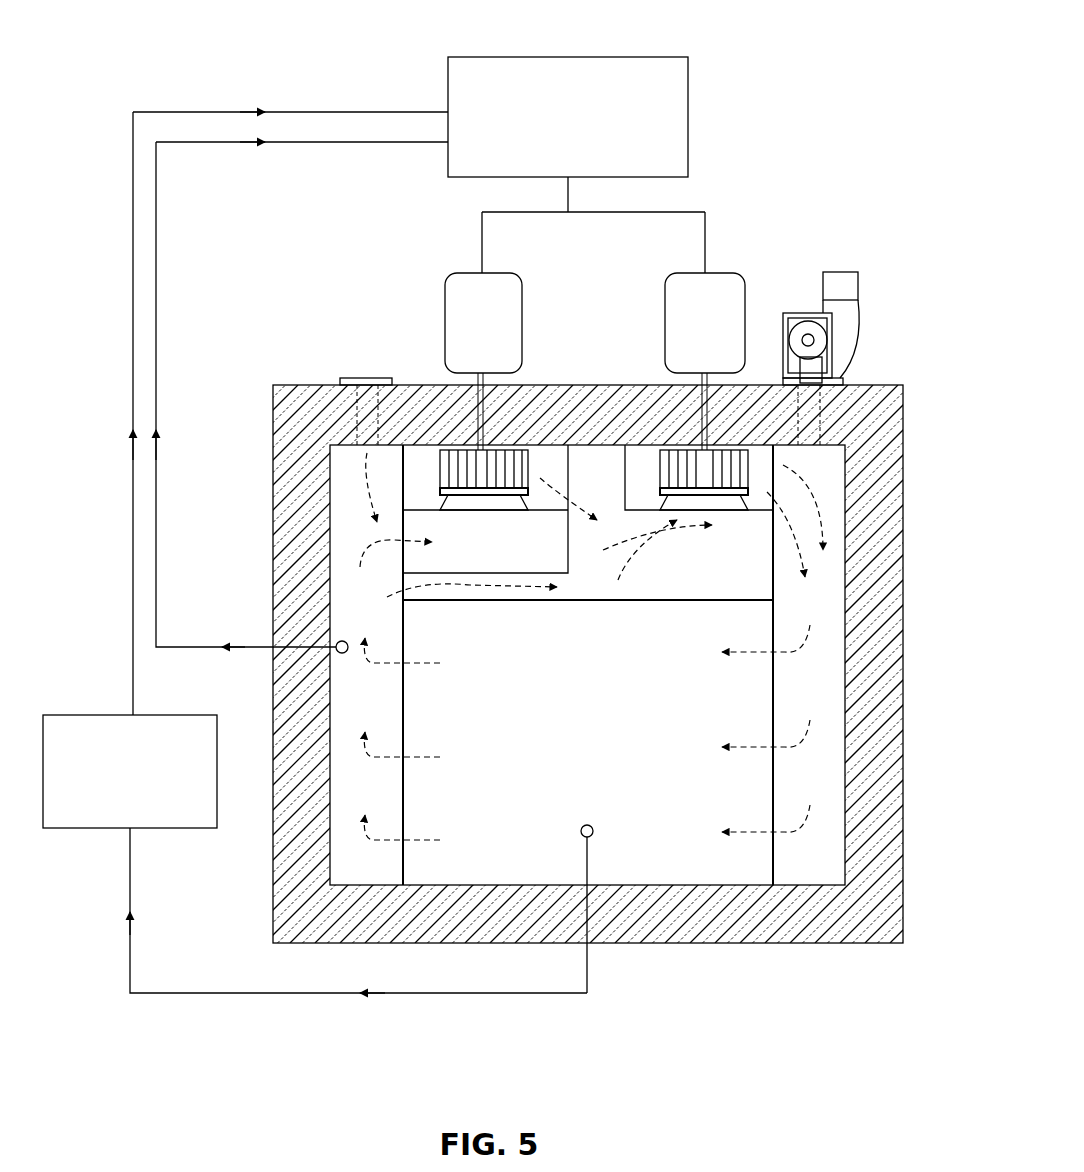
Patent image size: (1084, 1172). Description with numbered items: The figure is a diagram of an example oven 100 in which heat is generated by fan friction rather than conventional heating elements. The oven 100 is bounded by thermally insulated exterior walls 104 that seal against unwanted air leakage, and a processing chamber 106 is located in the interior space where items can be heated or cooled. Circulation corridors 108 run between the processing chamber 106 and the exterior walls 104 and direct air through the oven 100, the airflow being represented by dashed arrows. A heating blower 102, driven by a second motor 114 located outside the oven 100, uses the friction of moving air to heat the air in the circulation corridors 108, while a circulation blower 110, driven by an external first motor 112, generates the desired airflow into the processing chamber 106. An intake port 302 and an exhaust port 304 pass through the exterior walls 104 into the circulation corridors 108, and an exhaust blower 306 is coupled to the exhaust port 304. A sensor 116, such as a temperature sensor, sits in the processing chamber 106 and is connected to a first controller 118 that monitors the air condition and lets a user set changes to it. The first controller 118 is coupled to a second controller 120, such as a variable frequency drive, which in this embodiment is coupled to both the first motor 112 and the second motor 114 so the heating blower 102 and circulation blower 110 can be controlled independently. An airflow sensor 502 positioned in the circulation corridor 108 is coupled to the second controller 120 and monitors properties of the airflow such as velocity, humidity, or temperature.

The oven 100 is at (316, 19).
The heating blower 102 is at (455, 448).
The exterior walls 104 is at (862, 403).
The processing chamber 106 is at (733, 712).
The circulation corridors 108 is at (342, 510).
The circulation blower 110 is at (672, 448).
The first motor 112 is at (705, 323).
The second motor 114 is at (483, 323).
The sensor 116 is at (598, 836).
The first controller 118 is at (315, 552).
The second controller 120 is at (419, 165).
The intake port 302 is at (338, 375).
The exhaust port 304 is at (840, 378).
The exhaust blower 306 is at (858, 268).
The airflow sensor 502 is at (338, 640).